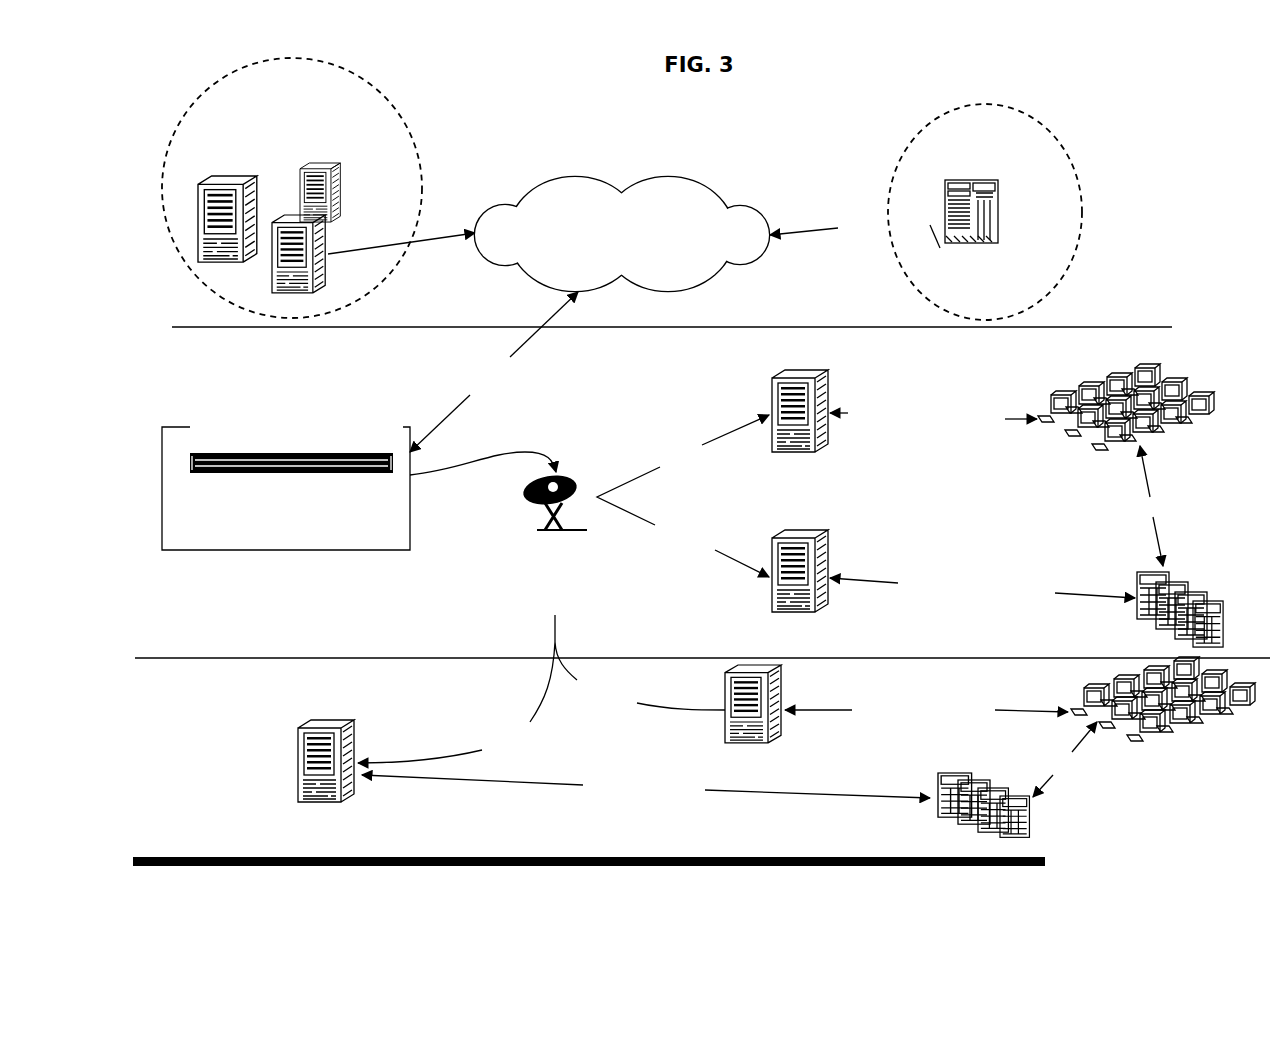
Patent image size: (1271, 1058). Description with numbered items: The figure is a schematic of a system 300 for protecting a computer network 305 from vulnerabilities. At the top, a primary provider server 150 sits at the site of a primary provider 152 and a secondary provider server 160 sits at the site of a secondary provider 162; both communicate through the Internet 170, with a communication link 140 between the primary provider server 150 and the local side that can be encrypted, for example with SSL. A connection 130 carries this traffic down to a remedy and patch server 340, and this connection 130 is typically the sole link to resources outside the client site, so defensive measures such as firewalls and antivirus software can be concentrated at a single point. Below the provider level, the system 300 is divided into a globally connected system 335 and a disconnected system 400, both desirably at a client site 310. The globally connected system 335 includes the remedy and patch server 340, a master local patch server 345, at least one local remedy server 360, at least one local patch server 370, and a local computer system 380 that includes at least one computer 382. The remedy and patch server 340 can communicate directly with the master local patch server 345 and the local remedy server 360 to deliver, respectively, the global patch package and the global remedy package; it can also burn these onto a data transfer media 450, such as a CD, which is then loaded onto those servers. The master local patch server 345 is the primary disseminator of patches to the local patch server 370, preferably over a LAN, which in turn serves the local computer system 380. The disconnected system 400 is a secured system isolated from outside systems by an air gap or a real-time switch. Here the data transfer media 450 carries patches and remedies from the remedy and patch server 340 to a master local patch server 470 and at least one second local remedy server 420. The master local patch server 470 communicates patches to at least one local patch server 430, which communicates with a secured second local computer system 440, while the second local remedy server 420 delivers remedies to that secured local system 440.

The system 300 is at (688, 455).
The secondary provider 162 is at (417, 148).
The secondary provider server 160 is at (336, 238).
The Internet 170 is at (622, 234).
The communication link 140 is at (804, 212).
The primary provider server 150 is at (838, 228).
The primary provider 152 is at (1075, 153).
The globally connected system 335 is at (260, 363).
The connection 130 is at (456, 373).
The remedy and patch server 340 is at (286, 488).
The data transfer media 450 is at (535, 507).
The client site 310 is at (658, 385).
The local remedy server 360 is at (775, 426).
The master local patch server 345 is at (806, 586).
The computer network 305 is at (1211, 358).
The local computer system 380 is at (1117, 430).
The computer 382 is at (1197, 420).
The local patch server 370 is at (1139, 585).
The disconnected system 400 is at (702, 668).
The master local patch server 470 is at (440, 774).
The second local remedy server 420 is at (744, 717).
The local patch server 430 is at (879, 805).
The second local computer system 440 is at (1125, 704).